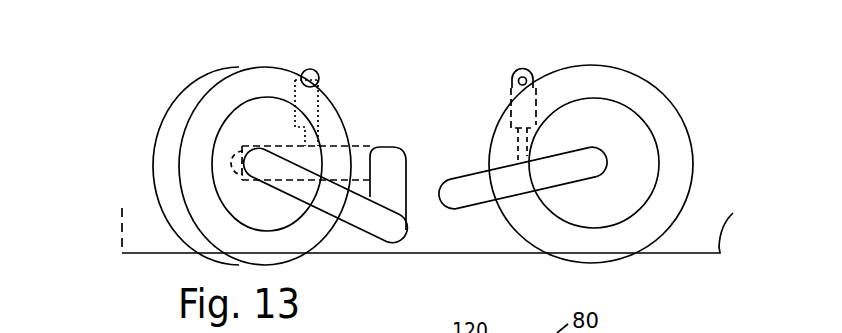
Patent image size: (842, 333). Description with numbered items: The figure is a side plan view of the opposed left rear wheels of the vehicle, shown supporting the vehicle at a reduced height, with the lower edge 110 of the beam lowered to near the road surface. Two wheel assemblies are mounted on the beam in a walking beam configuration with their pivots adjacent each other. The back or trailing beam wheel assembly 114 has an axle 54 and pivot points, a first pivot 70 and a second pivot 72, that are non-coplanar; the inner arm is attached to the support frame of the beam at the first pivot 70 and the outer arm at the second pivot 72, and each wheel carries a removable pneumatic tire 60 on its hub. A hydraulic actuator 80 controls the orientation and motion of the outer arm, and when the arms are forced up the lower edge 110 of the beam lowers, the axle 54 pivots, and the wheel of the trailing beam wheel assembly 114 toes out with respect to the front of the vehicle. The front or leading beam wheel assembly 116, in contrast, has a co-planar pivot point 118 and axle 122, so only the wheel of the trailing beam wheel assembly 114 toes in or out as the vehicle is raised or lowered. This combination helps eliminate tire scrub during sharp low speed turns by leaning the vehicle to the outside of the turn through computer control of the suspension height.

The axle 54 is at (245, 153).
The removable pneumatic tire 60 is at (235, 82).
The first pivot 70 is at (374, 246).
The second pivot 72 is at (392, 144).
The hydraulic actuator 80 is at (311, 69).
The lower edge of the beam 110 is at (173, 257).
The trailing beam wheel assembly 114 is at (192, 173).
The leading beam wheel assembly 116 is at (643, 158).
The pivot point 118 is at (447, 207).
The axle 122 is at (598, 163).